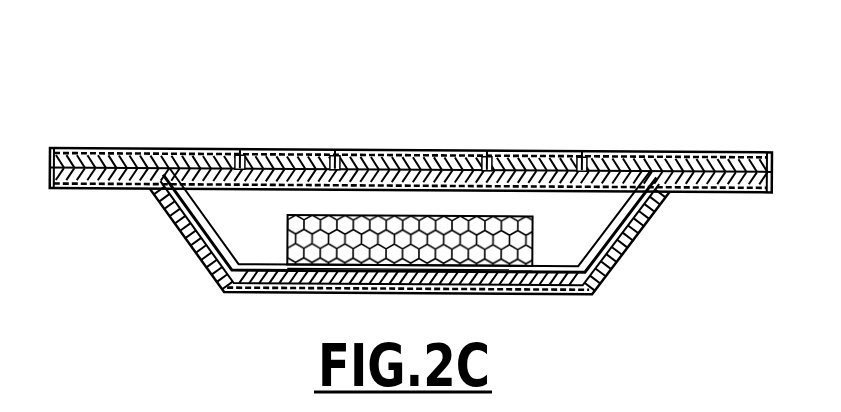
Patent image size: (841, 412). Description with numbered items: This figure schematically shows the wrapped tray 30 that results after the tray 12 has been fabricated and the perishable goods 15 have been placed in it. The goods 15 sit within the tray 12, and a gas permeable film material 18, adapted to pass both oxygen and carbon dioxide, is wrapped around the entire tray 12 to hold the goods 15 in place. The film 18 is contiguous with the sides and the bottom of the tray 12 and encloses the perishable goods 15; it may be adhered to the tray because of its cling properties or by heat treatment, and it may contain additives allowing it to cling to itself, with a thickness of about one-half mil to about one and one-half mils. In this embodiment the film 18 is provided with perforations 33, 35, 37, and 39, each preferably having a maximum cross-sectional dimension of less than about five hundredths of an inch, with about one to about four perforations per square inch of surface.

The wrapped tray 30 is at (188, 73).
The gas permeable film material 18 is at (712, 153).
The perforation 39 is at (240, 148).
The perforation 37 is at (334, 148).
The perforation 35 is at (487, 152).
The perforation 33 is at (582, 150).
The tray 12 is at (216, 223).
The perishable goods 15 is at (534, 230).